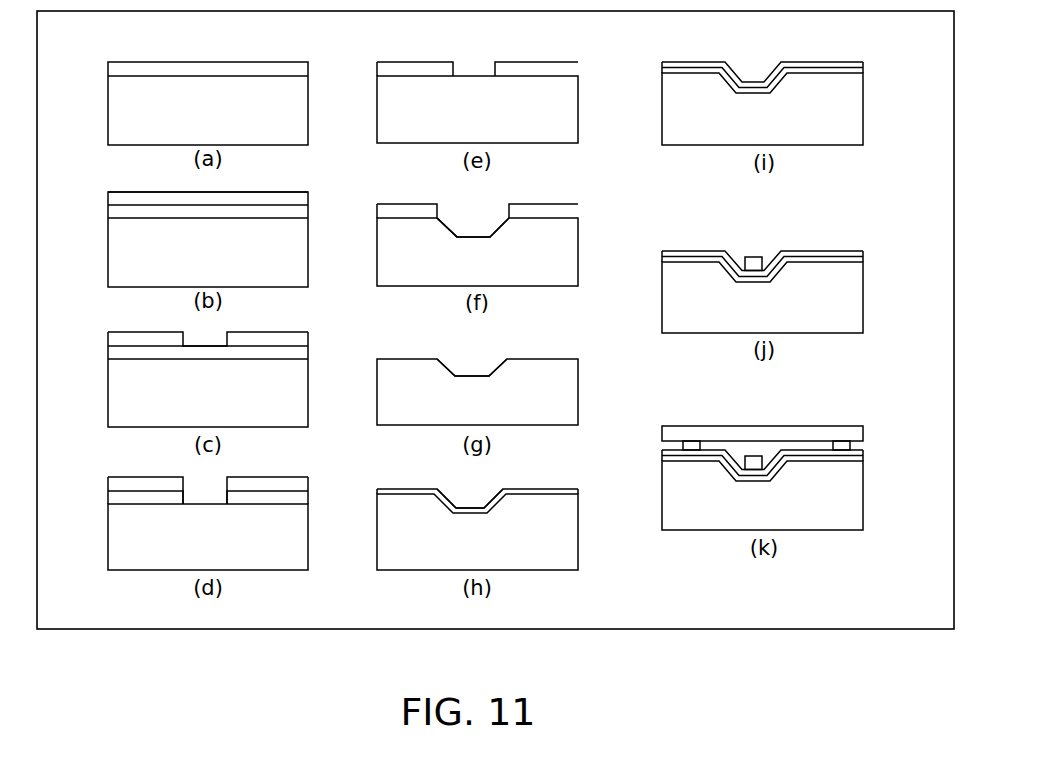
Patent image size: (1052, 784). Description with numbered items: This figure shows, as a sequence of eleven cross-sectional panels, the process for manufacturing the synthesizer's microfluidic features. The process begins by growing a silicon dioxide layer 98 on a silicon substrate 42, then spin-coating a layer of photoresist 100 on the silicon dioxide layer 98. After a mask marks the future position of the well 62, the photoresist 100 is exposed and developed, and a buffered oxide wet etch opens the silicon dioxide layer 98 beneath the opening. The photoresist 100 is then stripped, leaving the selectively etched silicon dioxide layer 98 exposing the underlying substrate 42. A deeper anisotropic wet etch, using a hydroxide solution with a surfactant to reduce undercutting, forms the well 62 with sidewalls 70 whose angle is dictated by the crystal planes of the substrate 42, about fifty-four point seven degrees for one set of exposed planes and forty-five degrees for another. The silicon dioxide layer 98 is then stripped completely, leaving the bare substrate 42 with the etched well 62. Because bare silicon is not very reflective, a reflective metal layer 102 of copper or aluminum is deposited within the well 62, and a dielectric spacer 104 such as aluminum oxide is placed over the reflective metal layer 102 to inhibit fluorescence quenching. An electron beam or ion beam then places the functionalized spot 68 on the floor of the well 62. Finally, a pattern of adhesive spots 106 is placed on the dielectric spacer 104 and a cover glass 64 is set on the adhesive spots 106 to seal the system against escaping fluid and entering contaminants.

The silicon substrate 42 is at (775, 518).
The silicon dioxide layer 98 is at (377, 210).
The photoresist 100 is at (107, 478).
The well 62 is at (484, 501).
The sidewalls 70 is at (445, 227).
The reflective metal layer 102 is at (896, 471).
The dielectric spacer 104 is at (896, 449).
The functionalized spot 68 is at (753, 255).
The cover glass 64 is at (662, 431).
The adhesive spots 106 is at (683, 444).